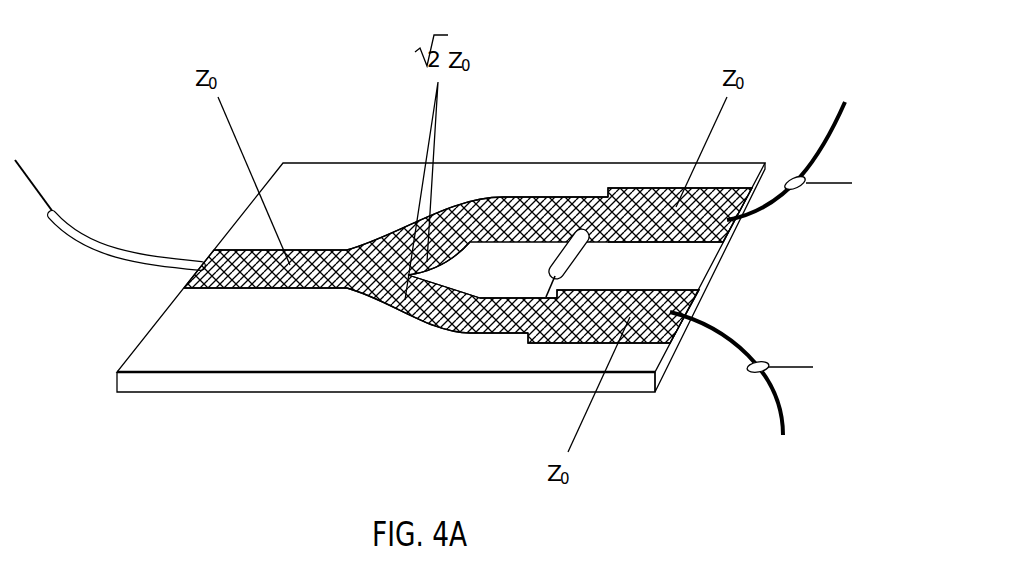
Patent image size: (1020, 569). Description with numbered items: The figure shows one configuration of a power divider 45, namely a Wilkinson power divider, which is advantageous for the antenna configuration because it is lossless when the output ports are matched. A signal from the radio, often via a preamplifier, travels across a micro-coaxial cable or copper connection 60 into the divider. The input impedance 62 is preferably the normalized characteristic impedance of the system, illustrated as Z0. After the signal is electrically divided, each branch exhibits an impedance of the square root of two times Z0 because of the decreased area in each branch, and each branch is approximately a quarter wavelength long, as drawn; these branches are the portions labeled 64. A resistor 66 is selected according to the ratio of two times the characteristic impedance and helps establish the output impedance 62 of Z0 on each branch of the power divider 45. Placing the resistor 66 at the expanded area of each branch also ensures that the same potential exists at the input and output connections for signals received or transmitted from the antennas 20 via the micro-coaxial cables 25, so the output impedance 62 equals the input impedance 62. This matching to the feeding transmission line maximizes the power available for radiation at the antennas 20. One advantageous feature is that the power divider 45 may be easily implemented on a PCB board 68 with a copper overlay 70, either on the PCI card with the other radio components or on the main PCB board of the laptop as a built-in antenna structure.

The antennas 20 is at (857, 97).
The micro-coaxial cables 25 is at (788, 195).
The power divider 45 is at (580, 130).
The micro-coaxial cable or copper connection 60 is at (103, 255).
The input impedance / output impedance 62 is at (250, 263).
The sqrt(2) Z0 quarter-wave arm 64 is at (440, 286).
The resistor 66 is at (555, 261).
The PCB board 68 is at (238, 355).
The copper overlay 70 is at (338, 283).